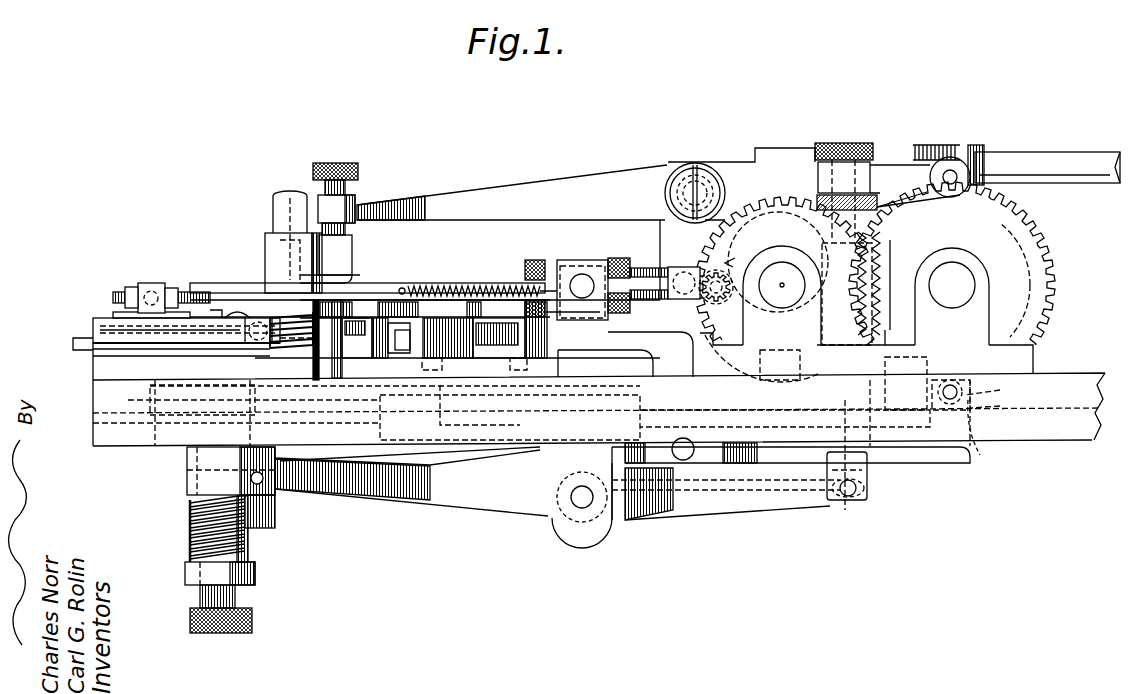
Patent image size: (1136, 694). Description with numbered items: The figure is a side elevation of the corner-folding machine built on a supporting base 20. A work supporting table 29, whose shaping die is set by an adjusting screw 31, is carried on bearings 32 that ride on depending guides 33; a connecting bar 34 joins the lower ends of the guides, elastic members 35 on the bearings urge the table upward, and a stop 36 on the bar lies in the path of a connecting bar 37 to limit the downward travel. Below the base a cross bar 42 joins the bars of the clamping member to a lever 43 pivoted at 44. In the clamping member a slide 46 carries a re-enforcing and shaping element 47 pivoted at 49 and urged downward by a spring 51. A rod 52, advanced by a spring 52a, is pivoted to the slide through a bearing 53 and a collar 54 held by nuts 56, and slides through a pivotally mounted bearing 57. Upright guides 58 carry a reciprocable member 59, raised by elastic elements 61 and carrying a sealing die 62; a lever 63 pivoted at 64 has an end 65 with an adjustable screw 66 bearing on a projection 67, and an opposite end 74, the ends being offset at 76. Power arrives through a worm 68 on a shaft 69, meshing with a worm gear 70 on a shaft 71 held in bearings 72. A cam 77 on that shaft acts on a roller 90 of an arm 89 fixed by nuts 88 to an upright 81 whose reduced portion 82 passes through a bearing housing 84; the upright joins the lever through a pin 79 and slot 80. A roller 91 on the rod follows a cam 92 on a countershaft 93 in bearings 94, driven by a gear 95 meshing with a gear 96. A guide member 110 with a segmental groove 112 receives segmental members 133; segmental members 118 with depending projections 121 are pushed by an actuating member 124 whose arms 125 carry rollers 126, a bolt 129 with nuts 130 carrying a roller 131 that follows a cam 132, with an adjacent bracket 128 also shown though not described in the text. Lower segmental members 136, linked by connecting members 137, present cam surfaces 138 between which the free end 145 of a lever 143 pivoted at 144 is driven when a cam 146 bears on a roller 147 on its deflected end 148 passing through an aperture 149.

The supporting base 20 is at (1083, 376).
The work supporting table 29 is at (93, 375).
The adjusting screw 31 is at (73, 346).
The bearings 32 is at (187, 467).
The guides 33 is at (192, 510).
The connecting bar 34 is at (185, 575).
The elastic member 35 is at (192, 528).
The stop 36 is at (190, 625).
The connecting bar 37 is at (215, 478).
The cross bar 42 is at (265, 528).
The lever 43 is at (500, 510).
The pivot 44 is at (575, 510).
The slide 46 is at (98, 318).
The combined re-enforcing and shaping element 47 is at (250, 340).
The pivot 49 is at (222, 336).
The spring 51 is at (240, 305).
The rod 52 is at (225, 300).
The spring 52a is at (490, 258).
The bearing 53 is at (112, 312).
The collar 54 is at (155, 283).
The nuts 56 is at (130, 287).
The pivotally mounted bearing 57 is at (588, 279).
The upright guides 58 is at (270, 196).
The reciprocable member 59 is at (265, 240).
The elastic elements 61 is at (285, 340).
The die 62 is at (335, 283).
The lever 63 is at (438, 199).
The pivot 64 is at (692, 170).
The lever end 65 is at (358, 200).
The adjustable screw 66 is at (338, 163).
The projection 67 is at (352, 252).
The worm 68 is at (950, 145).
The shaft 69 is at (1038, 160).
The worm gear 70 is at (1025, 222).
The shaft 71 is at (960, 265).
The bearings 72 is at (1025, 292).
The lever end 74 is at (935, 159).
The offset 76 is at (700, 170).
The cam 77 is at (1050, 232).
The pin 79 is at (852, 498).
The slot 80 is at (838, 515).
The upright 81 is at (868, 462).
The reduced upper portion 82 is at (846, 143).
The bearing housing 84 is at (920, 200).
The adjustable nuts 88 is at (820, 165).
The arm 89 is at (875, 162).
The roller 90 is at (978, 150).
The anti-friction roller 91 is at (745, 270).
The cam 92 is at (762, 305).
The countershaft 93 is at (800, 305).
The bearings 94 is at (790, 365).
The gear 95 is at (845, 246).
The gear 96 is at (878, 255).
The guide member 110 is at (325, 350).
The segmental groove 112 is at (370, 300).
The segmental shaped member 118 is at (425, 300).
The depending projection 121 is at (432, 375).
The actuating member 124 is at (565, 268).
The arms 125 is at (525, 318).
The anti-friction rollers 126 is at (500, 340).
The bracket 128 is at (615, 375).
The bolt 129 is at (682, 267).
The nuts 130 is at (533, 260).
The anti-friction roller 131 is at (705, 275).
The cam 132 is at (770, 215).
The segmental shaped members 133 is at (360, 310).
The segmental shaped members 136 is at (360, 405).
The connecting member 137 is at (348, 357).
The cam surface 138 is at (440, 392).
The lever 143 is at (768, 475).
The pivot 144 is at (685, 460).
The free end 145 is at (450, 455).
The cam 146 is at (1060, 280).
The anti-friction roller 147 is at (998, 388).
The lever end 148 is at (991, 433).
The aperture 149 is at (1001, 404).